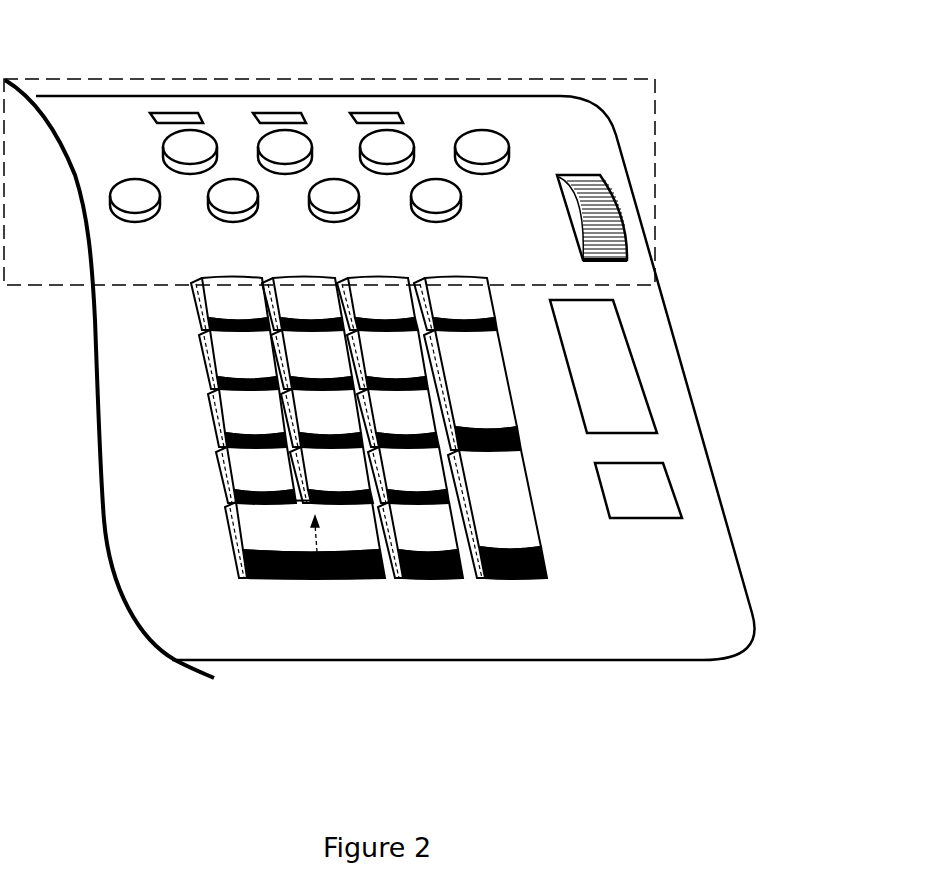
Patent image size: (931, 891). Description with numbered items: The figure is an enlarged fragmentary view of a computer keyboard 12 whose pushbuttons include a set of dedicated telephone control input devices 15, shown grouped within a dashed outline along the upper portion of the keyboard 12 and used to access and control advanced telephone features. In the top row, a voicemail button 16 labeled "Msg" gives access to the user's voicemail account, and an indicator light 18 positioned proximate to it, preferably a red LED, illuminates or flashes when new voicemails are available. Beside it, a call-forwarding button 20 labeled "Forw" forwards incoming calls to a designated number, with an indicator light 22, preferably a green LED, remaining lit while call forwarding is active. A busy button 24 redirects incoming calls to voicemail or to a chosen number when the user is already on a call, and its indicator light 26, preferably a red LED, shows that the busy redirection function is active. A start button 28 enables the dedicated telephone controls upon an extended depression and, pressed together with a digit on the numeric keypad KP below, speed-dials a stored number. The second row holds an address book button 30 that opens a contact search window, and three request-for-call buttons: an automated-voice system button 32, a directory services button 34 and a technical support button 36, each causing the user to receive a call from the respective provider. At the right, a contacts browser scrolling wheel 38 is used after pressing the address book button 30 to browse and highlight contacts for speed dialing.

The keyboard 12 is at (687, 483).
The dedicated telephone control input devices 15 is at (664, 116).
The voicemail button 16 is at (205, 135).
The indicator light 18 is at (170, 110).
The call-forwarding button 20 is at (303, 140).
The indicator light 22 is at (277, 110).
The busy button 24 is at (410, 137).
The indicator light 26 is at (377, 110).
The start button 28 is at (480, 127).
The address book button 30 is at (110, 197).
The automated-voice system button 32 is at (260, 199).
The directory services button 34 is at (360, 193).
The technical support button 36 is at (460, 203).
The contacts browser scrolling wheel 38 is at (617, 205).
The numeric keypad KP is at (327, 578).